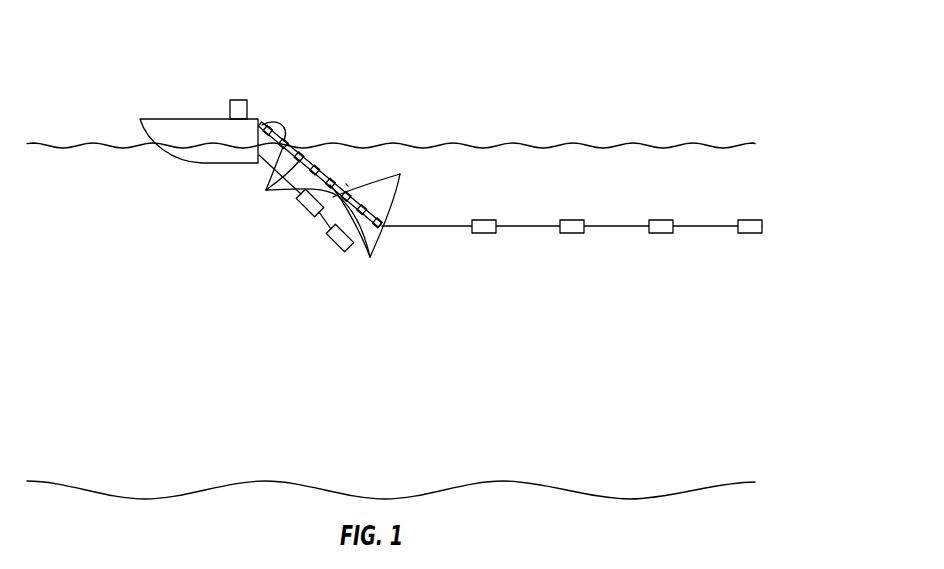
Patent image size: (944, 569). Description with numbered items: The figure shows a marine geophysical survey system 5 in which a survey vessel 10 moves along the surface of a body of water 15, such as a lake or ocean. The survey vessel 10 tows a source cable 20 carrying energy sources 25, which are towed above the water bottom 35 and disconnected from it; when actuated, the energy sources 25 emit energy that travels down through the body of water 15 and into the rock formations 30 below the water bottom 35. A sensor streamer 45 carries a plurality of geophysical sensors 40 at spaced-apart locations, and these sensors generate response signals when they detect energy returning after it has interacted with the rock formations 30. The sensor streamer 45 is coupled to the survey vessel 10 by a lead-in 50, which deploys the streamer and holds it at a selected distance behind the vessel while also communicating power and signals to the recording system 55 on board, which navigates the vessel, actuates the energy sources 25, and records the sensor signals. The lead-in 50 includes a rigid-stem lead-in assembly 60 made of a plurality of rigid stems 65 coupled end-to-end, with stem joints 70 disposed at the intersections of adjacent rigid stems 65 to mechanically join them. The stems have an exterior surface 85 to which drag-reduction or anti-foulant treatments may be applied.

The marine geophysical survey system 5 is at (188, 56).
The survey vessel 10 is at (158, 118).
The body of water 15 is at (222, 301).
The source cable 20 is at (298, 204).
The energy sources 25 is at (327, 238).
The rock formations 30 is at (520, 514).
The water bottom 35 is at (513, 480).
The geophysical sensors 40 is at (486, 219).
The sensor streamer 45 is at (428, 224).
The lead-in 50 is at (327, 174).
The recording system 55 is at (240, 100).
The rigid-stem lead-in assembly 60 is at (296, 137).
The rigid stems 65 is at (262, 123).
The stem joints 70 is at (268, 131).
The exterior surface 85 is at (346, 184).